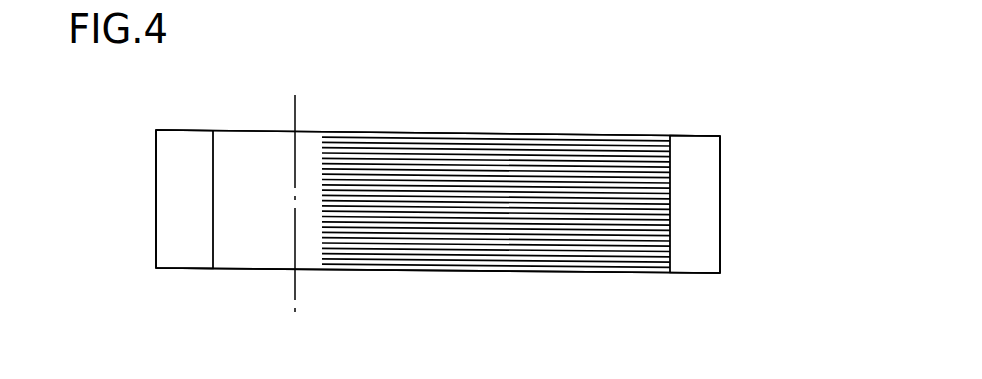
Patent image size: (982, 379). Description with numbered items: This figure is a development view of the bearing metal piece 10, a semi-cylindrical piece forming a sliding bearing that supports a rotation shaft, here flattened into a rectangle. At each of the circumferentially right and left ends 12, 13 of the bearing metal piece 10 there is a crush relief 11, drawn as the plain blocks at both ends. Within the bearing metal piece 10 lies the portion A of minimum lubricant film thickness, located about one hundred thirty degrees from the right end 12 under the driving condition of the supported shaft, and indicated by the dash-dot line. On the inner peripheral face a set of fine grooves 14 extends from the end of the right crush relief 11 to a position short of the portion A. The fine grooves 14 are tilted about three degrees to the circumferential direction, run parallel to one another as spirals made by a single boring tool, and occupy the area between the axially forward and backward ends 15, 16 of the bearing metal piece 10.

The bearing metal piece 10 is at (685, 107).
The crush relief 11 is at (188, 256).
The right end 12 is at (722, 189).
The left end 13 is at (156, 173).
The fine grooves 14 is at (557, 213).
The axially forward end 15 is at (486, 272).
The axially backward end 16 is at (443, 132).
The portion of minimum lubricant film thickness A is at (294, 111).